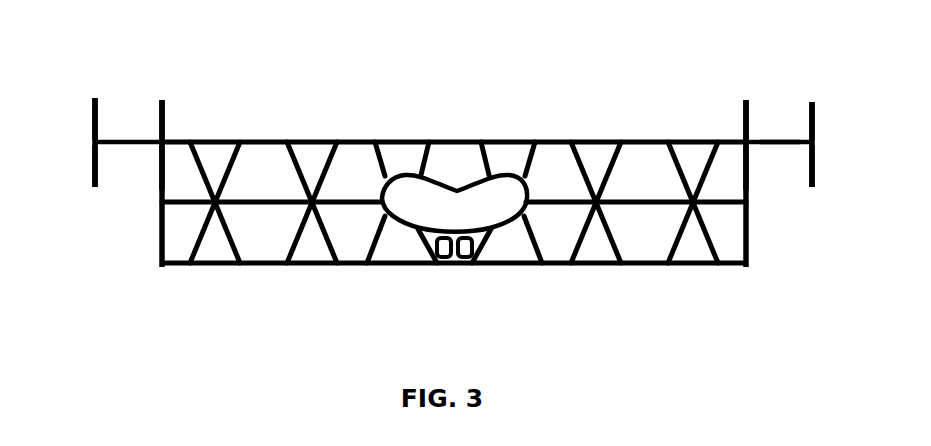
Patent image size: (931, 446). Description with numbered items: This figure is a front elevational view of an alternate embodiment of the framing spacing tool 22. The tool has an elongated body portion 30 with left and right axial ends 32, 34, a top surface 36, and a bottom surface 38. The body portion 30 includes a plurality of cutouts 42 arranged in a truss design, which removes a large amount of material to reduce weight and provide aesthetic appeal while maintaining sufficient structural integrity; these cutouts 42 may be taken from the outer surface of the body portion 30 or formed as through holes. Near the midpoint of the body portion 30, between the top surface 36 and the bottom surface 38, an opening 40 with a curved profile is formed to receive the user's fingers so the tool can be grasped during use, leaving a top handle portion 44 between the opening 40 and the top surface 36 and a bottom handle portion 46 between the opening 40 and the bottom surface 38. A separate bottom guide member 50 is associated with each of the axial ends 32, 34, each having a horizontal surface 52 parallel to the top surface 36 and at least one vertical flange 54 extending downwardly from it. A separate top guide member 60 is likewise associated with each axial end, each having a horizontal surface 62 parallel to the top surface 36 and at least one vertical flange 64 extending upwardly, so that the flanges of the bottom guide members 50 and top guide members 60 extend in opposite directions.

The framing spacing tool 22 is at (439, 106).
The body portion 30 is at (312, 207).
The left axial end 32 is at (160, 243).
The right axial end 34 is at (750, 245).
The top surface 36 is at (375, 140).
The bottom surface 38 is at (358, 265).
The opening 40 is at (500, 198).
The cutouts 42 is at (312, 162).
The top handle portion 44 is at (458, 170).
The bottom handle portion 46 is at (420, 248).
The bottom guide member 50 is at (91, 193).
The horizontal surface 52 is at (778, 146).
The vertical flange 54 is at (92, 162).
The top guide member 60 is at (97, 92).
The horizontal surface 62 is at (130, 138).
The vertical flange 64 is at (92, 123).